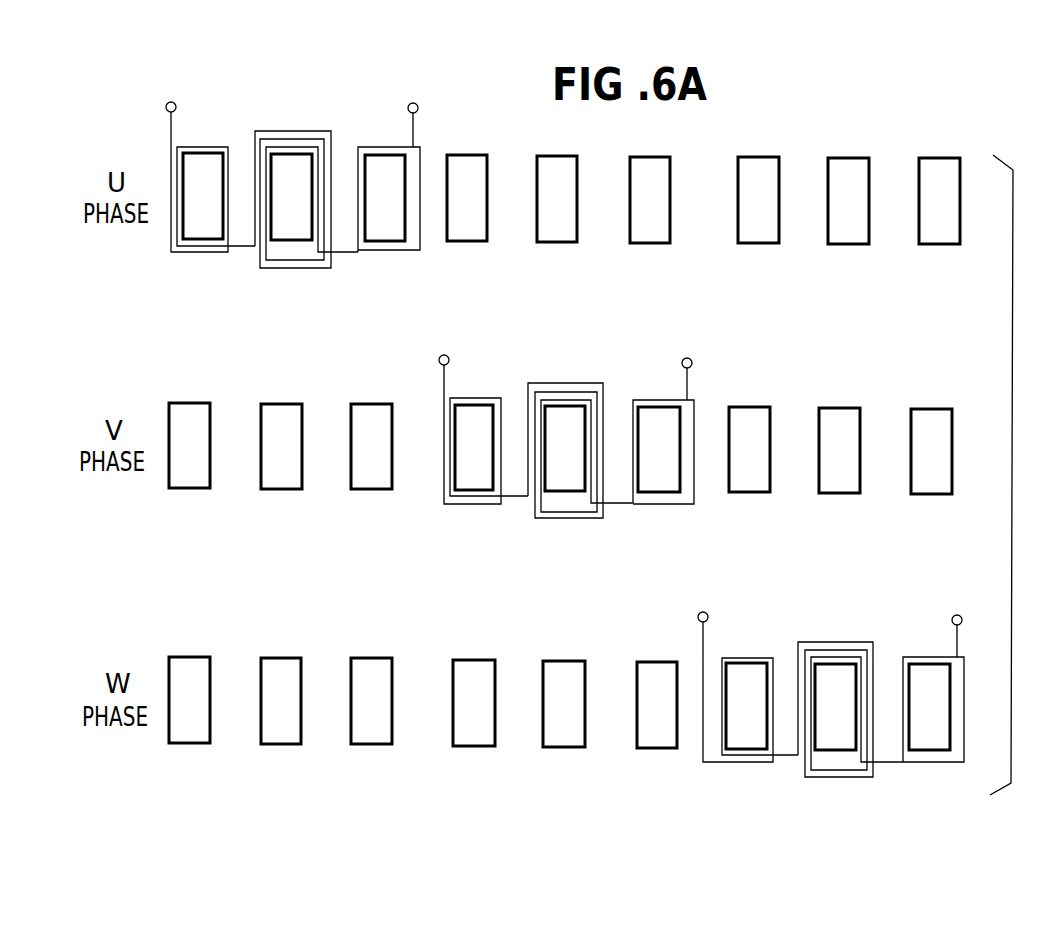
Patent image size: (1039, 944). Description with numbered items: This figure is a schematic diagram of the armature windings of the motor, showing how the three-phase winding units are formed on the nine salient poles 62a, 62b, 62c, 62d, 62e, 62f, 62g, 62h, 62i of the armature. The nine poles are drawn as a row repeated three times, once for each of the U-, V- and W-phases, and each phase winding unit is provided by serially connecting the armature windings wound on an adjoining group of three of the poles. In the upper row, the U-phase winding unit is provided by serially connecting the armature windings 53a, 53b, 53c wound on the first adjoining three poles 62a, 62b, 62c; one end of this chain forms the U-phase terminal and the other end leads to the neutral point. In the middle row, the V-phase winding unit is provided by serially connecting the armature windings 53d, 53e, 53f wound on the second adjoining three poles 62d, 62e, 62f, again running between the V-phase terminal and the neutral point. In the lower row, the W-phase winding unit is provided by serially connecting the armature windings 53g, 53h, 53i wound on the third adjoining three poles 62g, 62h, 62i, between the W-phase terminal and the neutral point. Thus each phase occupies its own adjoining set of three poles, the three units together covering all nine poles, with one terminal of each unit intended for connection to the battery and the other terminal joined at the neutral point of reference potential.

The salient pole 62a is at (205, 232).
The salient pole 62b is at (293, 232).
The salient pole 62c is at (392, 233).
The salient pole 62d is at (467, 235).
The salient pole 62e is at (557, 235).
The salient pole 62f is at (650, 235).
The salient pole 62g is at (757, 237).
The salient pole 62h is at (848, 237).
The salient pole 62i is at (940, 237).
The armature winding 53a is at (168, 256).
The armature winding 53b is at (263, 269).
The armature winding 53c is at (368, 253).
The armature winding 53d is at (446, 506).
The armature winding 53e is at (544, 519).
The armature winding 53f is at (650, 506).
The armature winding 53g is at (715, 763).
The armature winding 53h is at (823, 777).
The armature winding 53i is at (903, 763).